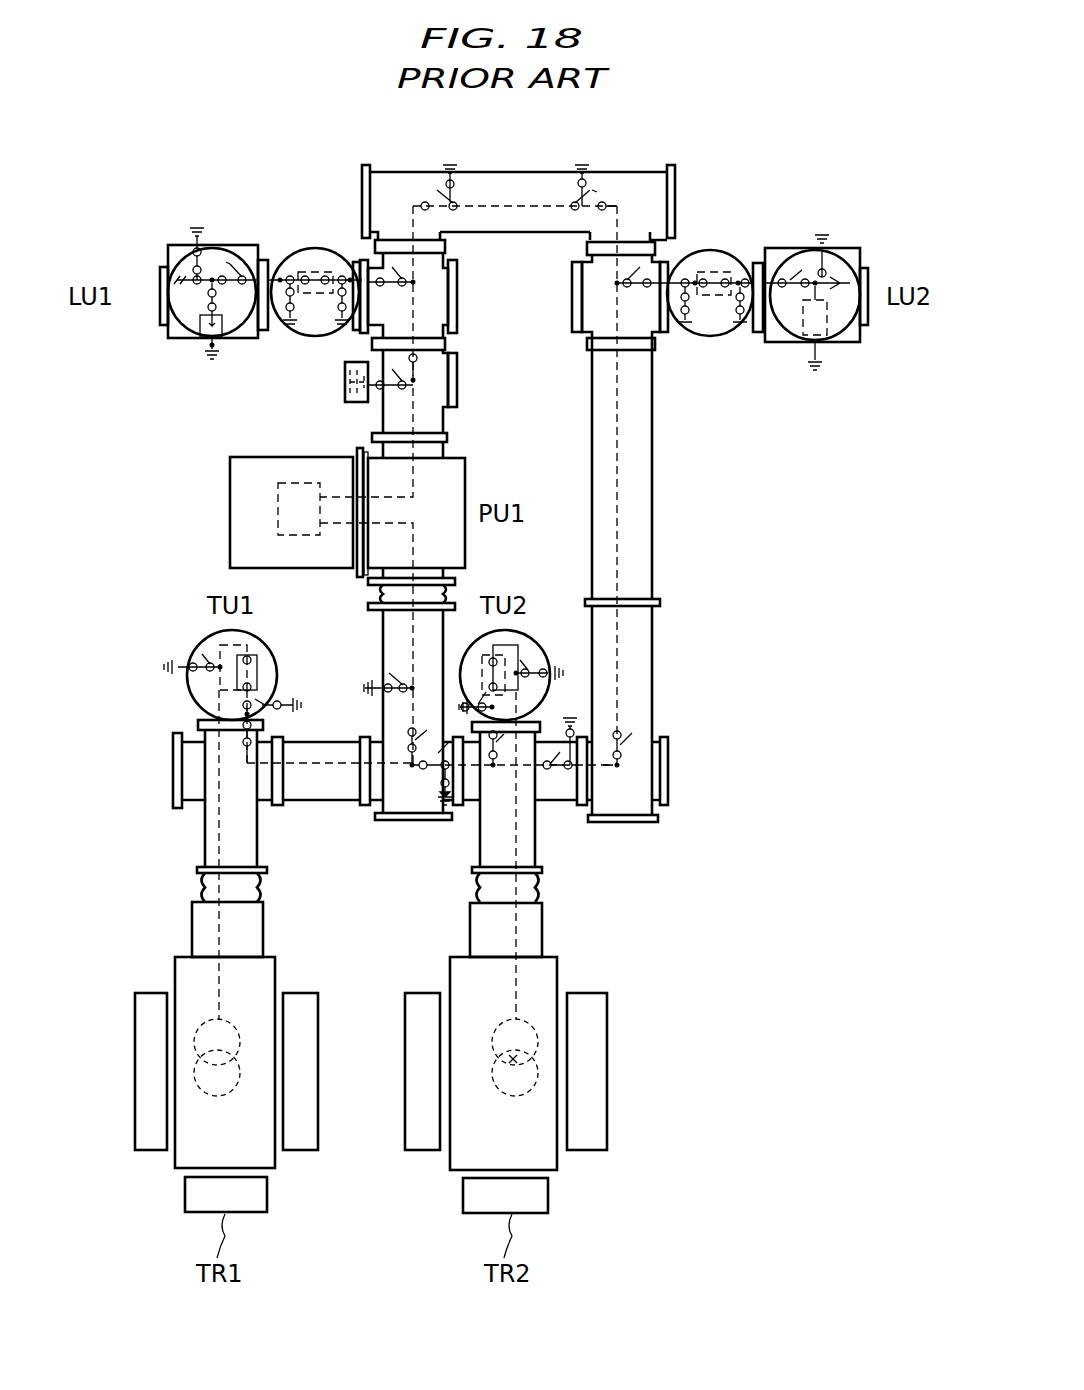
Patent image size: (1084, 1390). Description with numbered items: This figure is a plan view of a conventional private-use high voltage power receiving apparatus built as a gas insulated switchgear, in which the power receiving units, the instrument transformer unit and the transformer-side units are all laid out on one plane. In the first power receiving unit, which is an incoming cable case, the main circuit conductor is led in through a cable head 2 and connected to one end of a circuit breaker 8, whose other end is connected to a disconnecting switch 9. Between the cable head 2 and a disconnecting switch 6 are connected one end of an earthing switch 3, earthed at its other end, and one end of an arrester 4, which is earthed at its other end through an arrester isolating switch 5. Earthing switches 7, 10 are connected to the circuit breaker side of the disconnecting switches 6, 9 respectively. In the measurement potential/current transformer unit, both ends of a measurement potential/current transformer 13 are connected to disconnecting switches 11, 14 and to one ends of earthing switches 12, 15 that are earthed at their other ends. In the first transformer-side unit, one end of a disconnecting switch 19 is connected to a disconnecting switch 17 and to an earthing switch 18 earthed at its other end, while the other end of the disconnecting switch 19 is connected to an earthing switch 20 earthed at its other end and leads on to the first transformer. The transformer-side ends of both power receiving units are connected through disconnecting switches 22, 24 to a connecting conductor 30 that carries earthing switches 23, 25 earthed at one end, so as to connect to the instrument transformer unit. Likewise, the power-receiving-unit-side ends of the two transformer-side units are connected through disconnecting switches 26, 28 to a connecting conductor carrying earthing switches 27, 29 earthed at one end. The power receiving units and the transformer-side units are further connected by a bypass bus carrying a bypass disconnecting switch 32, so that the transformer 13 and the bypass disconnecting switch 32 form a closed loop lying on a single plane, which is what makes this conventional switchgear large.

The cable head 2 is at (162, 302).
The earthing switch 3 is at (214, 248).
The arrester 4 is at (206, 347).
The arrester isolating switch 5 is at (218, 302).
The disconnecting switch 6 is at (230, 264).
The earthing switch 7 is at (293, 333).
The circuit breaker 8 is at (312, 270).
The disconnecting switch 9 is at (373, 258).
The earthing switch 10 is at (335, 313).
The disconnecting switch 11 is at (446, 371).
The earthing switch 12 is at (397, 398).
The measurement potential/current transformer 13 is at (277, 515).
The disconnecting switch 14 is at (407, 733).
The earthing switch 15 is at (387, 675).
The disconnecting switch 17 is at (267, 713).
The earthing switch 18 is at (267, 708).
The disconnecting switch 19 is at (268, 657).
The earthing switch 20 is at (200, 662).
The disconnecting switch 22 is at (438, 200).
The earthing switch 23 is at (479, 172).
The disconnecting switch 24 is at (604, 205).
The earthing switch 25 is at (585, 167).
The disconnecting switch 26 is at (427, 773).
The earthing switch 27 is at (433, 802).
The disconnecting switch 28 is at (548, 752).
The earthing switch 29 is at (573, 721).
The connecting conductor 30 is at (517, 206).
The bypass disconnecting switch 32 is at (622, 752).